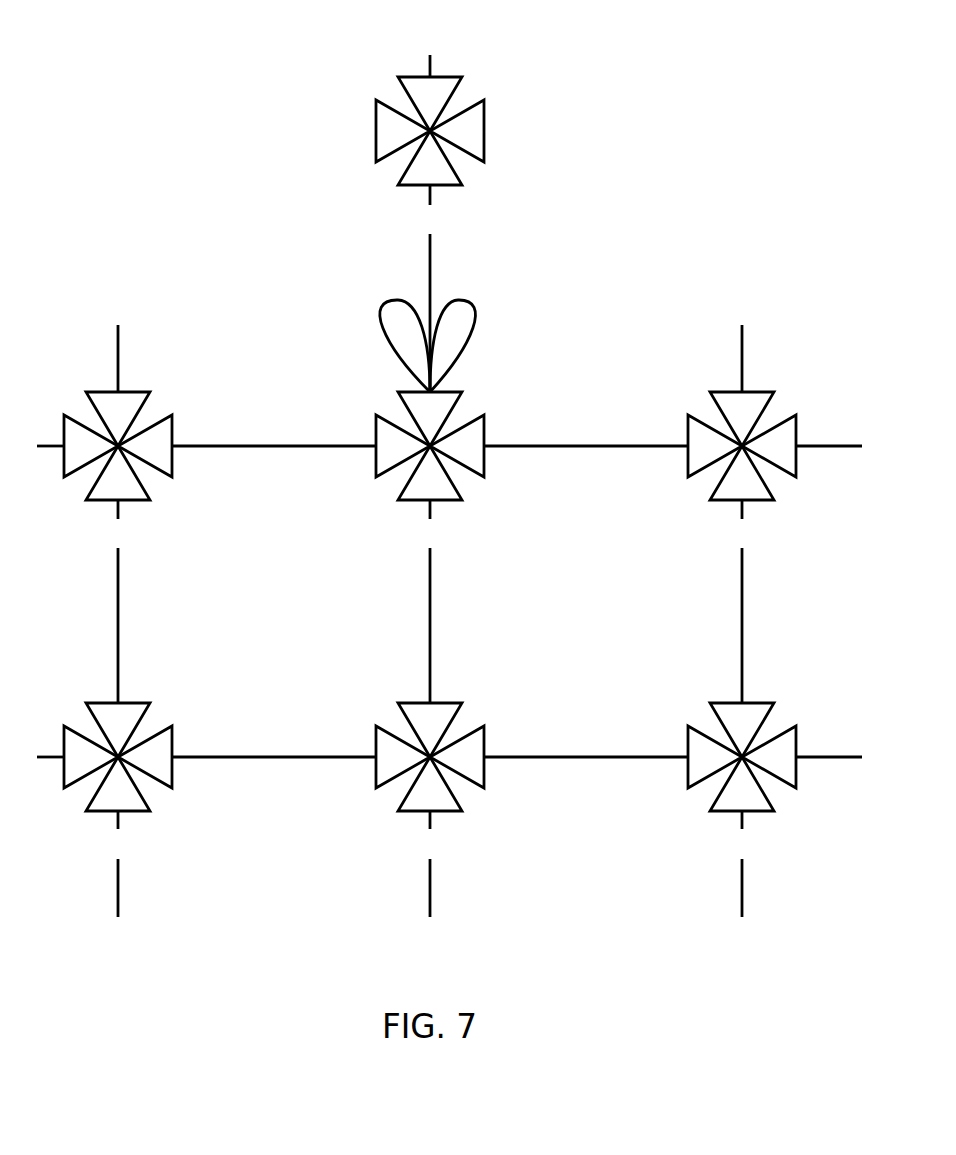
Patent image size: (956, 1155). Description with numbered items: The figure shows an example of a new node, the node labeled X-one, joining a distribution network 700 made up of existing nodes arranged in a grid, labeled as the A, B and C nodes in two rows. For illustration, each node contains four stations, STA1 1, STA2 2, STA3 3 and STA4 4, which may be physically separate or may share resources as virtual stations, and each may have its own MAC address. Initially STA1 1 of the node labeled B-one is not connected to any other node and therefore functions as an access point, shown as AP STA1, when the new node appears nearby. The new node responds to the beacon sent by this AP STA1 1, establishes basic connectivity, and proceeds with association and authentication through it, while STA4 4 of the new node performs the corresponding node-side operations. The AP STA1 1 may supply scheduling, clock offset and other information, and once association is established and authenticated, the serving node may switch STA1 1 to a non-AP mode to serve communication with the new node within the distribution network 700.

The distribution network 700 is at (449, 474).
The STA1 1 is at (430, 417).
The STA2 2 is at (457, 444).
The STA3 3 is at (403, 444).
The STA4 4 is at (430, 471).